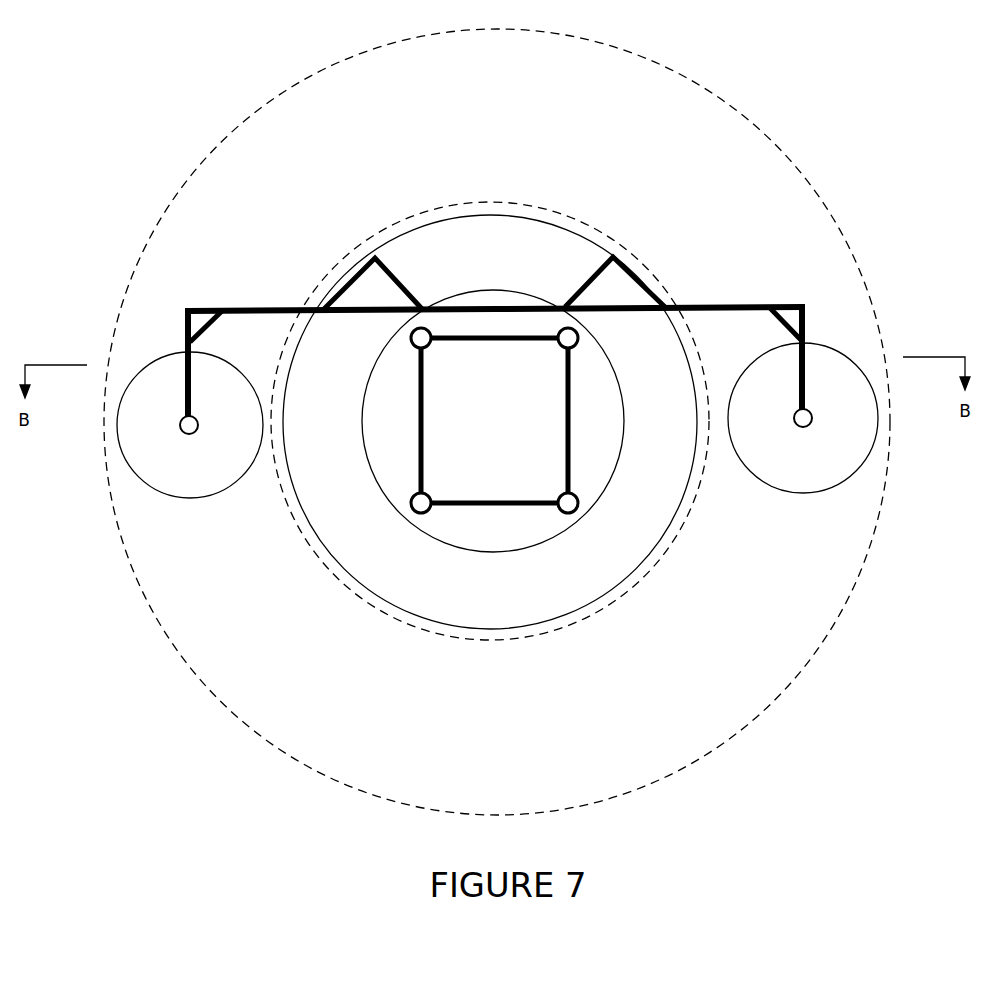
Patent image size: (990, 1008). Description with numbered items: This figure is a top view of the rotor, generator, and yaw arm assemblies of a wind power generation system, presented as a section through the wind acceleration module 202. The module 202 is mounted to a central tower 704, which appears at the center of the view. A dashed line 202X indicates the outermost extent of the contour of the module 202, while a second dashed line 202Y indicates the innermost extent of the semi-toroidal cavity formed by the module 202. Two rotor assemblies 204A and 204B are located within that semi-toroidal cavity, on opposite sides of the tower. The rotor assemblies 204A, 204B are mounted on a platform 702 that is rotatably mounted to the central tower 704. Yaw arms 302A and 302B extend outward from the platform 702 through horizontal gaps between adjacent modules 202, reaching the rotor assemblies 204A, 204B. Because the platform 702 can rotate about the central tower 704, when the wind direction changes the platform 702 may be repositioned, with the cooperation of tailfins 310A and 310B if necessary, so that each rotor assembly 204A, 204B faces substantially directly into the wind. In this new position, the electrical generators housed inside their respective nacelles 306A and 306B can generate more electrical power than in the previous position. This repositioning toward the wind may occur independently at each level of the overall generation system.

The wind acceleration module 202 is at (582, 119).
The dashed line indicating outermost extent of module contour 202X is at (736, 108).
The dashed line indicating innermost extent of semi-toroidal cavity 202Y is at (590, 220).
The platform 702 is at (477, 267).
The central tower 704 is at (463, 341).
The rotor assembly 204A is at (168, 484).
The rotor assembly 204B is at (781, 477).
The yaw arm 302A is at (263, 308).
The yaw arm 302B is at (728, 303).
The nacelle 306A is at (180, 419).
The nacelle 306B is at (812, 415).
The tailfin 310A is at (182, 303).
The tailfin 310B is at (810, 295).